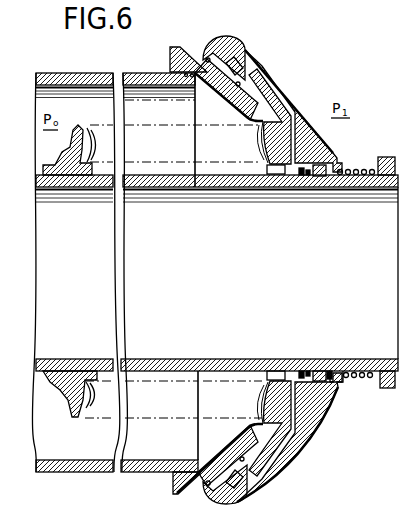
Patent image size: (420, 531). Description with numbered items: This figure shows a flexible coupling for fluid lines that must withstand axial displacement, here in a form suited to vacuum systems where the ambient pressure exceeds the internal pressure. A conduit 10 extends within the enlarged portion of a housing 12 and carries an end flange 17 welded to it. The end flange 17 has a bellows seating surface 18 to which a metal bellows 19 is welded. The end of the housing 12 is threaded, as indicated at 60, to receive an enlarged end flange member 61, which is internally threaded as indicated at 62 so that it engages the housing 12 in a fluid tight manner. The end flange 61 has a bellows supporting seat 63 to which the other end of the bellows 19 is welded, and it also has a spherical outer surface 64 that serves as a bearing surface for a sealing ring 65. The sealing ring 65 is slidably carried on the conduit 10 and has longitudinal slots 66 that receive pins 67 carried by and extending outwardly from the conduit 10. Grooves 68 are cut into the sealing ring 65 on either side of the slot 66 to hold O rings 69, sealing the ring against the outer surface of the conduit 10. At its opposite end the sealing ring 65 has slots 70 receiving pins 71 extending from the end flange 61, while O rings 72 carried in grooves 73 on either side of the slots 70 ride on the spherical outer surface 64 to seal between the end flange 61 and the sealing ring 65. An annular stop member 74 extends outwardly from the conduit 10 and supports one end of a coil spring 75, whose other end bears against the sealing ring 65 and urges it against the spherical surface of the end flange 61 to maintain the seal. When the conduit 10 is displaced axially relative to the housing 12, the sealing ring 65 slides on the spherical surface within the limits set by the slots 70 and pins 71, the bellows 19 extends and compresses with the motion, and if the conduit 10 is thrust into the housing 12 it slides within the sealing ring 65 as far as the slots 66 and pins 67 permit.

The conduit 10 is at (230, 345).
The housing 12 is at (148, 72).
The end flange 17 is at (67, 157).
The bellows seating surface 18 is at (79, 132).
The metal bellows 19 is at (93, 143).
The threads 60 is at (178, 48).
The enlarged end flange member 61 is at (230, 95).
The internal threads 62 is at (183, 89).
The bellows supporting seat 63 is at (272, 138).
The spherical outer surface 64 is at (257, 94).
The sealing ring 65 is at (238, 42).
The longitudinal slots 66 is at (329, 359).
The pins 67 is at (317, 359).
The grooves 68 is at (300, 359).
The O rings 69 is at (339, 384).
The slots 70 is at (262, 481).
The pins 71 is at (247, 497).
The O rings 72 is at (209, 486).
The grooves 73 is at (187, 489).
The annular stop member 74 is at (390, 389).
The coil spring 75 is at (357, 362).